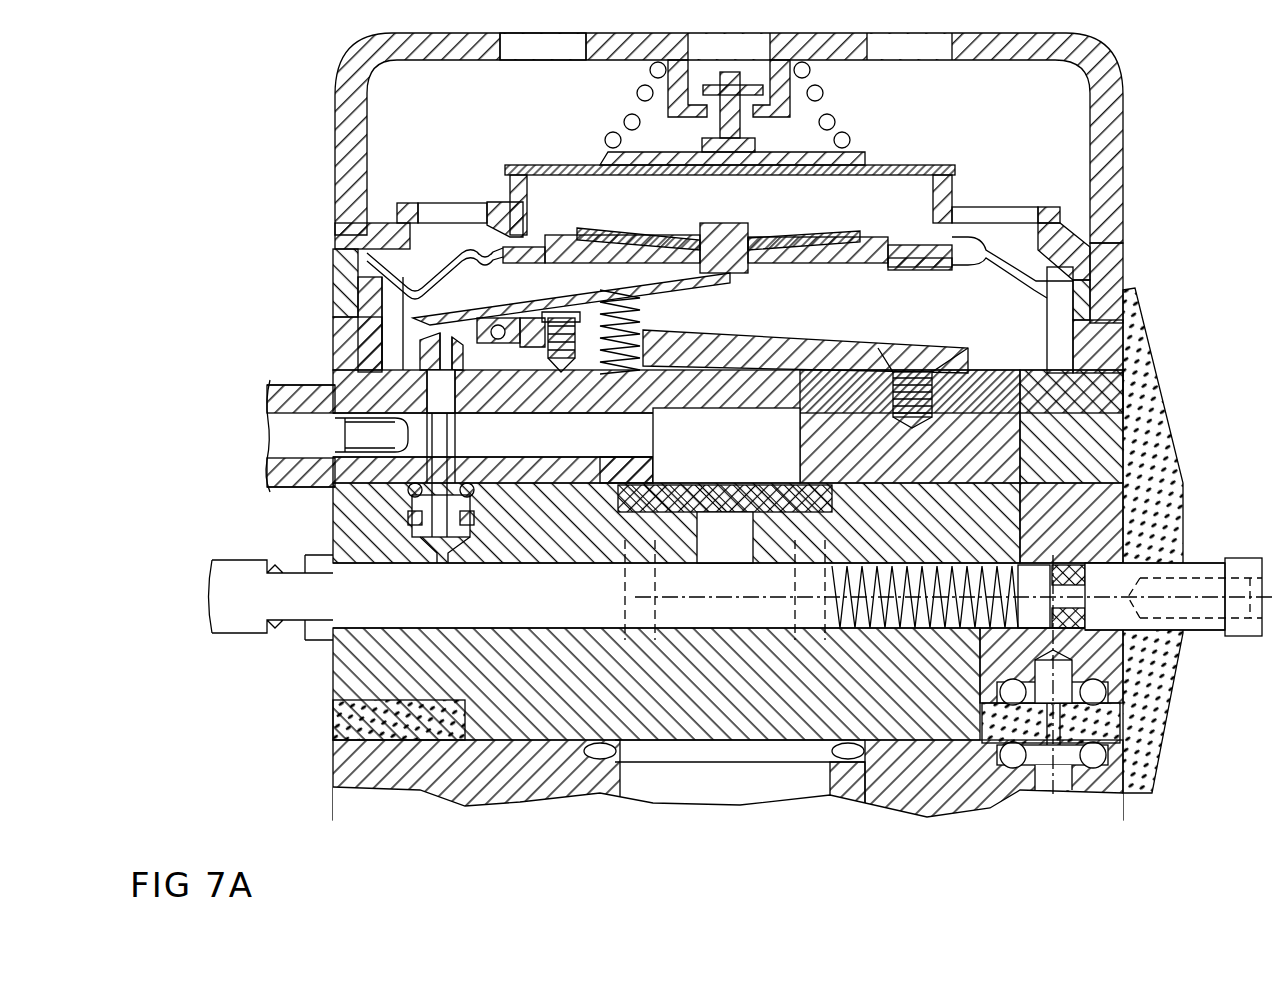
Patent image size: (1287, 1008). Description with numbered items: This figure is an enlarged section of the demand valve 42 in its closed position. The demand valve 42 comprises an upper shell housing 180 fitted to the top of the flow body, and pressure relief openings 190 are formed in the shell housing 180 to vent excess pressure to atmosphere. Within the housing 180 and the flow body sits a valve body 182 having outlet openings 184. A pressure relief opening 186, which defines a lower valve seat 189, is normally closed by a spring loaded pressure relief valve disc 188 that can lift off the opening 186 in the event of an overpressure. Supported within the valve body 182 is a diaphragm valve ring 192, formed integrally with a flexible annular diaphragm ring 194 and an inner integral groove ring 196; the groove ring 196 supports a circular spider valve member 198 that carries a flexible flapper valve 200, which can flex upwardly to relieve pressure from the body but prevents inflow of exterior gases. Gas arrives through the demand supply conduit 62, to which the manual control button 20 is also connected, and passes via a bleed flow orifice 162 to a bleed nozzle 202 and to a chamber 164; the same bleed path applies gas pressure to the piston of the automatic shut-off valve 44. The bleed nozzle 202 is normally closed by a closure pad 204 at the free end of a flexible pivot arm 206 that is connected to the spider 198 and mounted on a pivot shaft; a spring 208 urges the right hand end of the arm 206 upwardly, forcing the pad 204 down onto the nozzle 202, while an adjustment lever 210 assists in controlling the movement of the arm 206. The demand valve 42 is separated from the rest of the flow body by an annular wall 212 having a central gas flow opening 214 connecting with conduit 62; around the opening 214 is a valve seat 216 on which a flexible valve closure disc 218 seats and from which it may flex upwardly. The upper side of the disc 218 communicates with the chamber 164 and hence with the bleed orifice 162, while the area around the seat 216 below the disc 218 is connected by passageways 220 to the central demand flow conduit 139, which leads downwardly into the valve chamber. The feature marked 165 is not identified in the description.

The manual control button 20 is at (1215, 560).
The demand valve 42 is at (306, 252).
The automatic shut-off valve 44 is at (272, 375).
The conduit 62 is at (252, 630).
The central demand flow conduit 139 is at (730, 797).
The bleed flow orifice 162 is at (438, 563).
The chamber 164 is at (752, 450).
The inlet bore 165 is at (282, 442).
The upper shell housing 180 is at (345, 172).
The valve body 182 is at (404, 200).
The outlet openings 184 is at (484, 215).
The pressure relief opening 186 is at (935, 200).
The pressure relief valve disc 188 is at (892, 165).
The lower valve seat 189 is at (905, 245).
The pressure relief openings 190 is at (527, 52).
The diaphragm valve ring 192 is at (1055, 332).
The flexible annular diaphragm ring 194 is at (1025, 268).
The inner integral groove ring 196 is at (922, 272).
The circular spider valve member 198 is at (833, 257).
The flexible flapper valve 200 is at (818, 262).
The bleed nozzle 202 is at (404, 354).
The closure pad 204 is at (395, 318).
The flexible pivot arm 206 is at (590, 298).
The spring 208 is at (632, 320).
The adjustment lever 210 is at (700, 345).
The annular wall 212 is at (360, 523).
The central gas flow opening 214 is at (717, 503).
The valve seat 216 is at (700, 522).
The flexible valve closure disc 218 is at (672, 472).
The passageways 220 is at (638, 600).